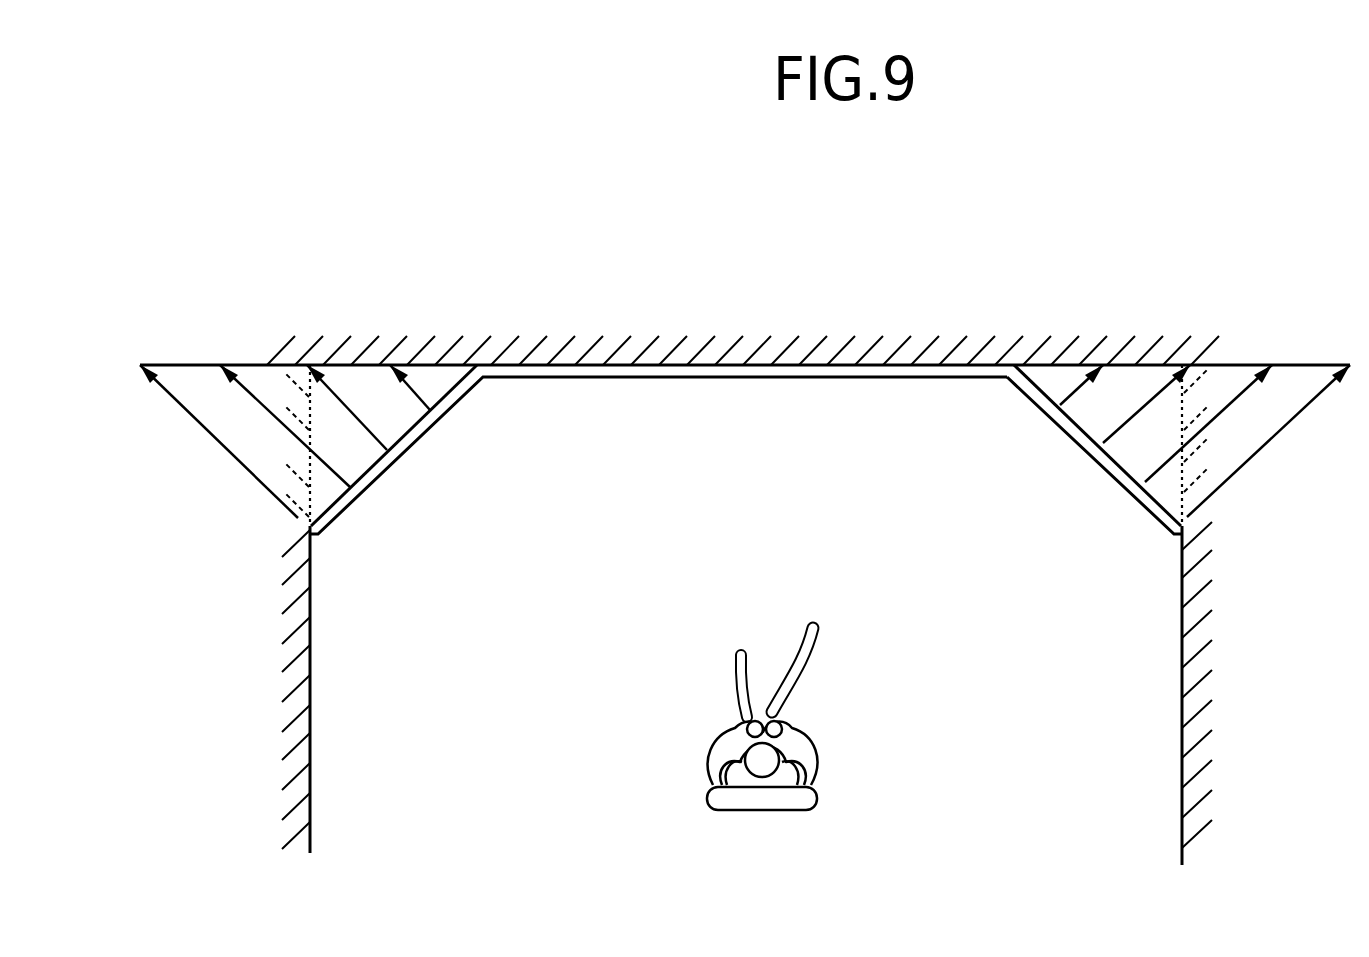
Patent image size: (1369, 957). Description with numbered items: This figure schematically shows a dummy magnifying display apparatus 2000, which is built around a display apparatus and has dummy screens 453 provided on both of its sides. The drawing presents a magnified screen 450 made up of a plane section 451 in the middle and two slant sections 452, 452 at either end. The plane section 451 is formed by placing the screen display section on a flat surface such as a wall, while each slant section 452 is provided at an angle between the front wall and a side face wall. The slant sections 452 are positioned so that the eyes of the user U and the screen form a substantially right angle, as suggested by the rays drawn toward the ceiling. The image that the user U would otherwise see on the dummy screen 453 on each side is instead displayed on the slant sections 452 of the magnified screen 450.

The dummy magnifying display apparatus 2000 is at (548, 275).
The magnified screen 450 is at (941, 258).
The plane section 451 is at (782, 362).
The slant section 452 is at (453, 386).
The dummy screen 453 is at (277, 362).
The user U is at (808, 763).